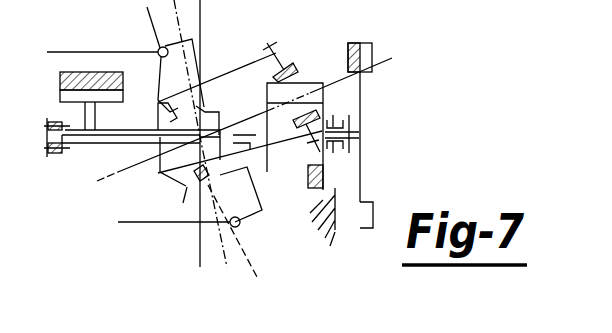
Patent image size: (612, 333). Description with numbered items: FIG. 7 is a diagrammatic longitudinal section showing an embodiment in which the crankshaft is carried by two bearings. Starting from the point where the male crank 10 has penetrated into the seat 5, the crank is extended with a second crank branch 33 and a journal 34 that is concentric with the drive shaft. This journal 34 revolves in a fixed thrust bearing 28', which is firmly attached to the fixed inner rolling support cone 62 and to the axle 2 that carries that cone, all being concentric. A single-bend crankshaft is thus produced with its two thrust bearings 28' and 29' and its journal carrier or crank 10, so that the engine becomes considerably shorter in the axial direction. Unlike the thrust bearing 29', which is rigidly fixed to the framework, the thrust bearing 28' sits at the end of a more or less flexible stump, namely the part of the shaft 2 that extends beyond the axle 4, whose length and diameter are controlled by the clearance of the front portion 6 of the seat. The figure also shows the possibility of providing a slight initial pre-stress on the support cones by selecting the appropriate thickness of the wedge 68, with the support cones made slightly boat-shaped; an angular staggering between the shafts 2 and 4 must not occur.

The axle 2 is at (160, 144).
The axle 4 is at (140, 103).
The seat 5 is at (253, 58).
The front portion of the seat 6 is at (167, 102).
The male crank 10 is at (309, 88).
The thrust bearing 28' is at (226, 91).
The thrust bearing 29' is at (362, 135).
The second crank branch 33 is at (265, 110).
The journal 34 is at (267, 175).
The inner rolling support cone 62 is at (187, 188).
The wedge 68 is at (47, 155).